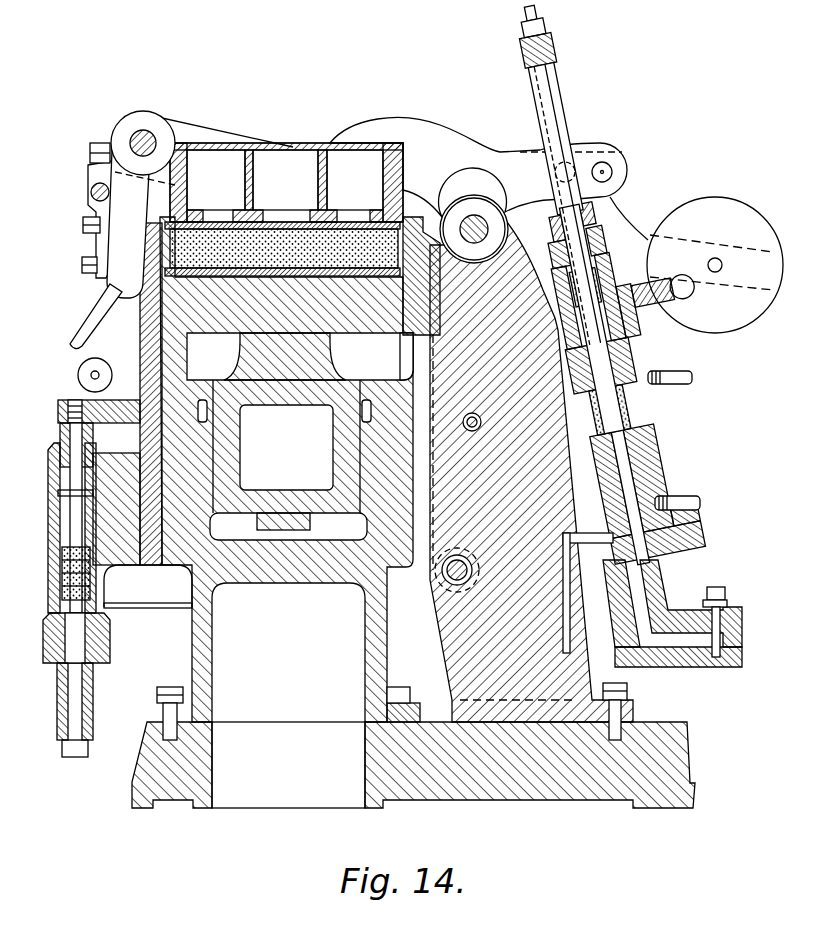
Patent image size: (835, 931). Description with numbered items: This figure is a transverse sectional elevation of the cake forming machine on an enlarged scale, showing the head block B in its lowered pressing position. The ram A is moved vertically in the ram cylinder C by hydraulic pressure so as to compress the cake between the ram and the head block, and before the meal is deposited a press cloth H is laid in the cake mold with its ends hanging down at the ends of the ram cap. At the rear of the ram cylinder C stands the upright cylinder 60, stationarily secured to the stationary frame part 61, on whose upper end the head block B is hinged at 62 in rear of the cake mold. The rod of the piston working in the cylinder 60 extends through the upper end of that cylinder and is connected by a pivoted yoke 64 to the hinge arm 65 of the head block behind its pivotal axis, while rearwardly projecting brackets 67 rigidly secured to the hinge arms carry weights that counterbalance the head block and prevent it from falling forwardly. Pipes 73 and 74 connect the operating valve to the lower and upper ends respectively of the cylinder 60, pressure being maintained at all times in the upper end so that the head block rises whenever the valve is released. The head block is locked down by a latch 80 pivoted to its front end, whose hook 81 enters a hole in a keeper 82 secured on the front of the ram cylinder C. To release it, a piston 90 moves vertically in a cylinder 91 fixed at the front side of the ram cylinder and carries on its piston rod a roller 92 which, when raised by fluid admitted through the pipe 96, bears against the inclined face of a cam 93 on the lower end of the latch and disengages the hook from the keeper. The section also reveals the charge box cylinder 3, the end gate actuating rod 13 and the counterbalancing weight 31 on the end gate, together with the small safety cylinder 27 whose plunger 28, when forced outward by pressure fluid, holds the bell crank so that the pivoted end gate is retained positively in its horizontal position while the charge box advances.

The charge box cylinder 3 is at (410, 333).
The weight 31 is at (213, 180).
The rod 13 is at (463, 425).
The safety cylinder 27 is at (442, 562).
The plunger 28 is at (448, 588).
The upright cylinder 60 is at (632, 428).
The stationary frame part 61 is at (568, 598).
The hinge 62 is at (480, 222).
The pivoted yoke 64 is at (568, 107).
The hinge arm 65 is at (500, 150).
The bracket 67 is at (628, 236).
The pipe 73 is at (682, 497).
The pipe 74 is at (675, 373).
The latch 80 is at (117, 218).
The hook 81 is at (141, 204).
The keeper 82 is at (141, 335).
The piston 90 is at (73, 530).
The cylinder 91 is at (53, 577).
The roller 92 is at (82, 370).
The cam 93 is at (80, 327).
The pipe 96 is at (140, 608).
The ram A is at (286, 447).
The head block B is at (269, 166).
The ram cylinder C is at (197, 570).
The press cloth H is at (283, 265).